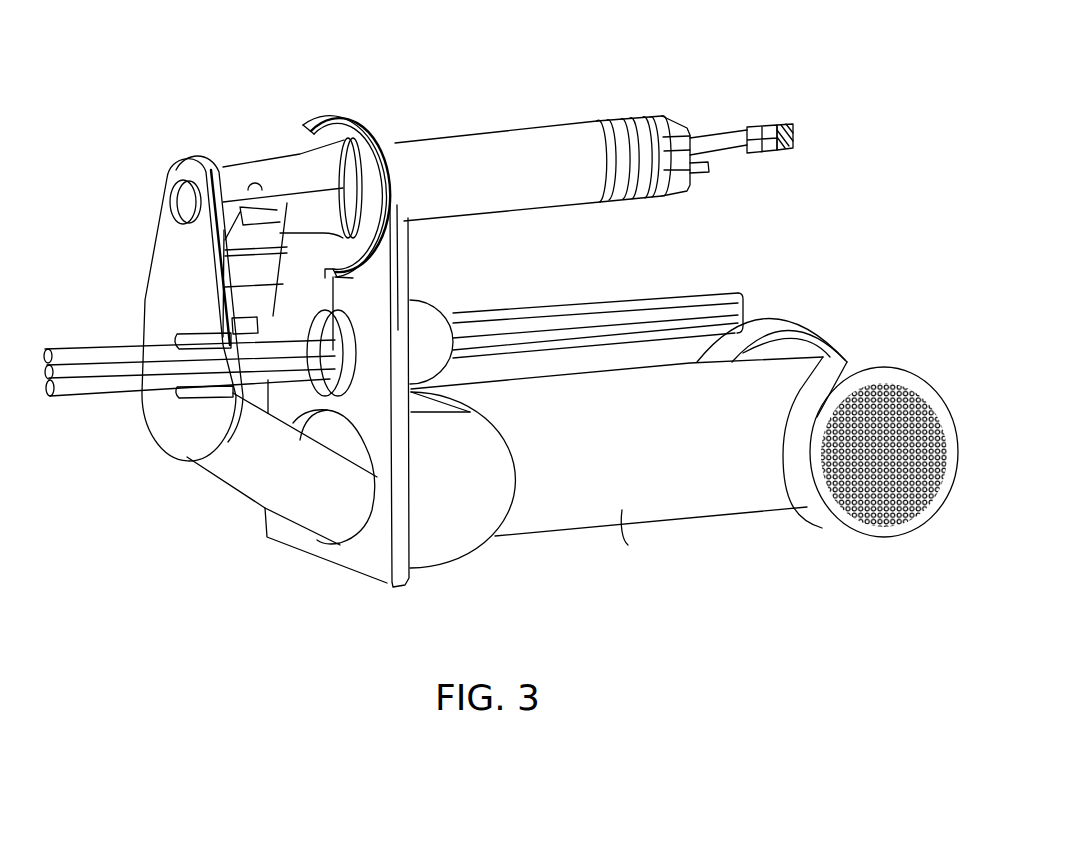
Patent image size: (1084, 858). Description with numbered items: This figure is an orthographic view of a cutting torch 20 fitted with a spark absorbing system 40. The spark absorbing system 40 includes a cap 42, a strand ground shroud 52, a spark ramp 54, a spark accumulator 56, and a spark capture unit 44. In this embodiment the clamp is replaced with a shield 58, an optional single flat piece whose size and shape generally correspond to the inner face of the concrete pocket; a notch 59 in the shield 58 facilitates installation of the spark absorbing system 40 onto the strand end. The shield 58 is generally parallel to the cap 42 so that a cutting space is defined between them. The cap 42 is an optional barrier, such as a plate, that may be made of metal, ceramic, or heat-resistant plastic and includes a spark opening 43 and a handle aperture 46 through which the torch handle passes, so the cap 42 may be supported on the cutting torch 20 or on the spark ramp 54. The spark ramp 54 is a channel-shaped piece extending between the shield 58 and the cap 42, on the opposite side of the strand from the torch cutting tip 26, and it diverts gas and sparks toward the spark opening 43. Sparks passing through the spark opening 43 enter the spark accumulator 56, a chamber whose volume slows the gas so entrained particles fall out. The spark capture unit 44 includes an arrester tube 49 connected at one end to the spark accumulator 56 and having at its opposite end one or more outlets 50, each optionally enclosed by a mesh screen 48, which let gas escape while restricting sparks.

The cutting torch 20 is at (492, 111).
The torch cutting tip 26 is at (255, 328).
The spark absorbing system 40 is at (515, 567).
The cap 42 is at (410, 257).
The spark opening 43 is at (360, 433).
The spark capture unit 44 is at (572, 532).
The handle aperture 46 is at (337, 148).
The mesh screen 48 is at (878, 533).
The arrester tube 49 is at (642, 536).
The outlets 50 is at (877, 390).
The strand ground shroud 52 is at (428, 322).
The spark ramp 54 is at (245, 477).
The spark accumulator 56 is at (490, 453).
The shield 58 is at (155, 295).
The notch 59 is at (193, 333).